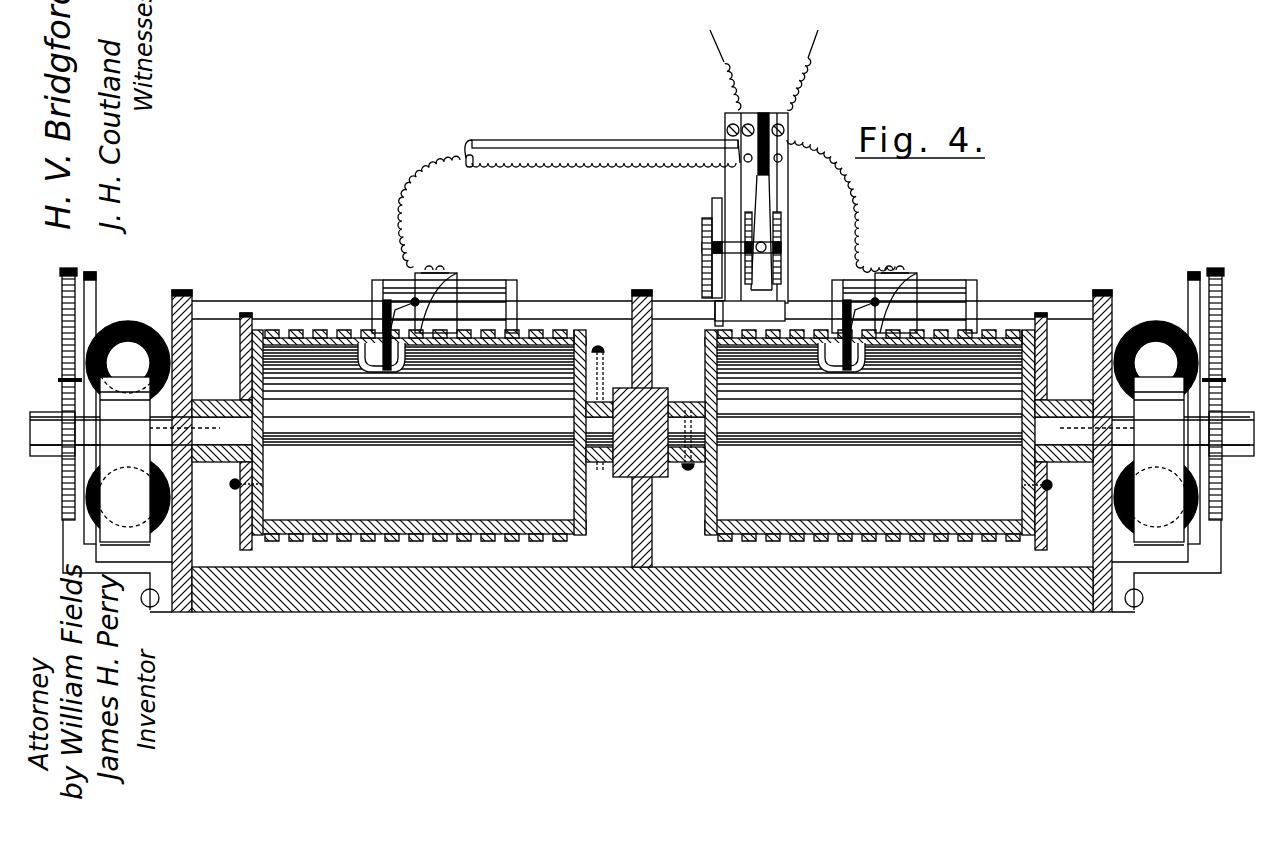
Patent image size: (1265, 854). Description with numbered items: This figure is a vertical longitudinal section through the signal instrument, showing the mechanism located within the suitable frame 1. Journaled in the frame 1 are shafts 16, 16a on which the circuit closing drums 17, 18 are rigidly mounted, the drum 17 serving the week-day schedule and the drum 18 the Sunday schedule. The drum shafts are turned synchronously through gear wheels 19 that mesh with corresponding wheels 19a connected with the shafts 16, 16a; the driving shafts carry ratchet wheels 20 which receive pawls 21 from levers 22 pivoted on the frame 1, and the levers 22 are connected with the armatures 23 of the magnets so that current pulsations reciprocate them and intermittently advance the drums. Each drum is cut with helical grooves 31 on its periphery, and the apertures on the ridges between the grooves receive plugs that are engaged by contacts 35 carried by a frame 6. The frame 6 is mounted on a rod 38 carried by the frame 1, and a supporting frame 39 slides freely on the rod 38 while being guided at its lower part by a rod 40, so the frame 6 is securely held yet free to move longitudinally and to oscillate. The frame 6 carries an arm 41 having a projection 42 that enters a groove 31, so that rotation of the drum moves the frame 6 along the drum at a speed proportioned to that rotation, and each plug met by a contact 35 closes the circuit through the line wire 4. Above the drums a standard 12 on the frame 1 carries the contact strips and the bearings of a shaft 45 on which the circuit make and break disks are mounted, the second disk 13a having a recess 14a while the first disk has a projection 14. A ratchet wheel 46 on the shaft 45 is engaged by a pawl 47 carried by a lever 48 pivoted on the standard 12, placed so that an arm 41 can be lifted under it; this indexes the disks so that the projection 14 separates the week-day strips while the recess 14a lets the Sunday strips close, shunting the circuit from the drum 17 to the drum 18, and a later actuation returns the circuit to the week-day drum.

The frame 1 is at (642, 467).
The circuit wire 4 is at (646, 151).
The frame 6 is at (492, 287).
The standard 12 is at (725, 180).
The circuit make and break disk 13a is at (778, 282).
The projection 14 is at (760, 240).
The recess 14a is at (782, 250).
The shaft 16 is at (640, 446).
The shaft 16a is at (783, 215).
The drum 17 is at (419, 435).
The drum 18 is at (870, 435).
The gear wheel 19 is at (240, 381).
The gear wheel 19a is at (1050, 506).
The ratchet wheel 20 is at (64, 356).
The pawl 21 is at (62, 312).
The lever 22 is at (96, 312).
The armature 23 is at (642, 439).
The groove 31 is at (584, 330).
The contact 35 is at (447, 283).
The rod 38 is at (600, 296).
The frame 39 is at (512, 310).
The rod 40 is at (668, 362).
The arm 41 is at (412, 300).
The projection 42 is at (383, 320).
The shaft 45 is at (712, 246).
The ratchet wheel 46 is at (702, 226).
The pawl 47 is at (712, 282).
The lever 48 is at (750, 303).